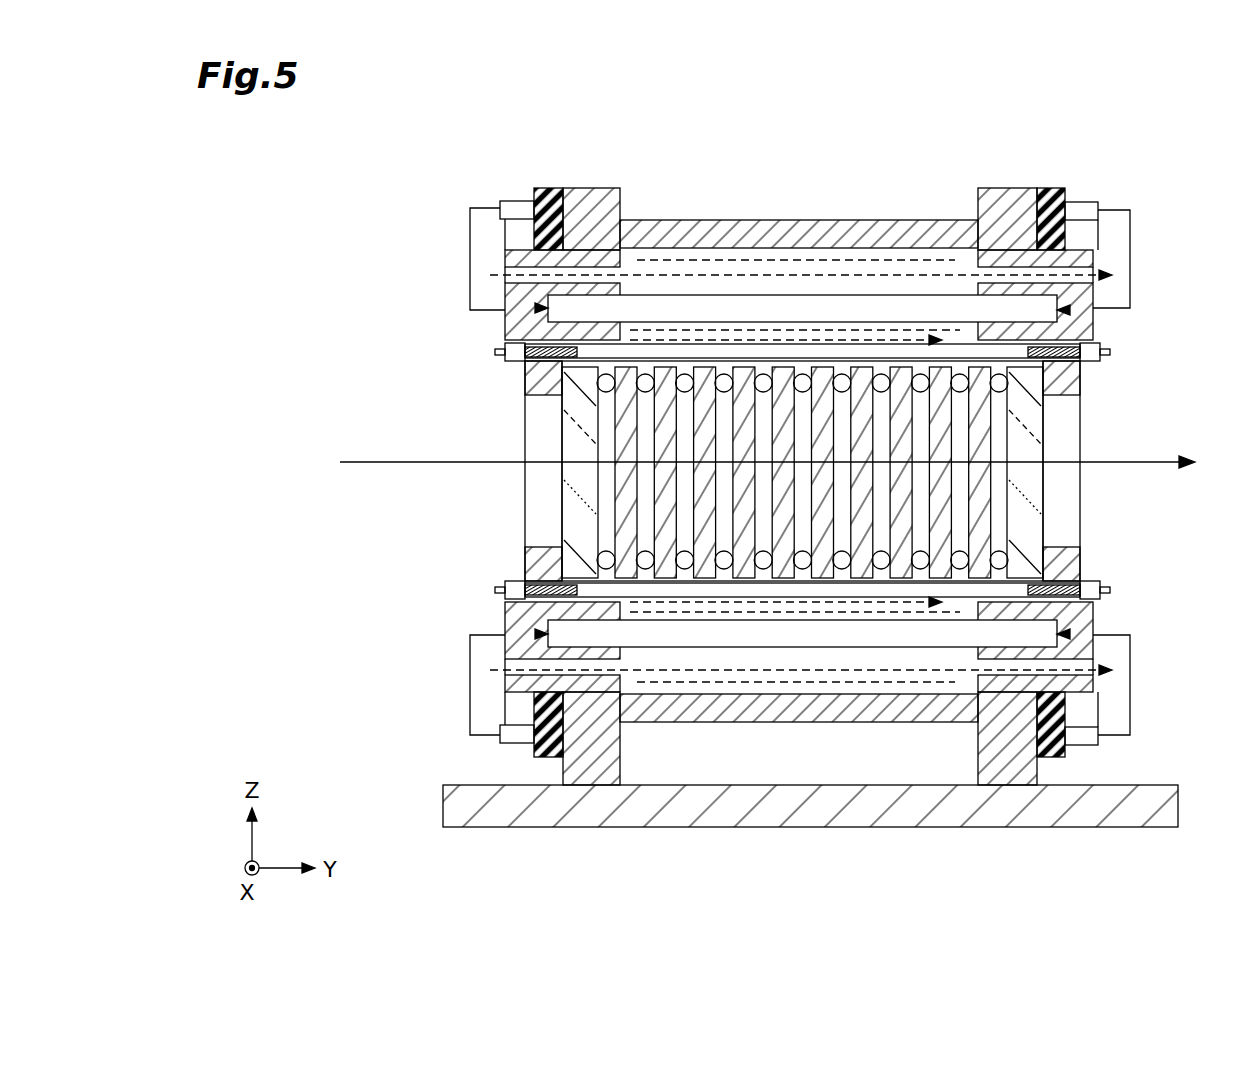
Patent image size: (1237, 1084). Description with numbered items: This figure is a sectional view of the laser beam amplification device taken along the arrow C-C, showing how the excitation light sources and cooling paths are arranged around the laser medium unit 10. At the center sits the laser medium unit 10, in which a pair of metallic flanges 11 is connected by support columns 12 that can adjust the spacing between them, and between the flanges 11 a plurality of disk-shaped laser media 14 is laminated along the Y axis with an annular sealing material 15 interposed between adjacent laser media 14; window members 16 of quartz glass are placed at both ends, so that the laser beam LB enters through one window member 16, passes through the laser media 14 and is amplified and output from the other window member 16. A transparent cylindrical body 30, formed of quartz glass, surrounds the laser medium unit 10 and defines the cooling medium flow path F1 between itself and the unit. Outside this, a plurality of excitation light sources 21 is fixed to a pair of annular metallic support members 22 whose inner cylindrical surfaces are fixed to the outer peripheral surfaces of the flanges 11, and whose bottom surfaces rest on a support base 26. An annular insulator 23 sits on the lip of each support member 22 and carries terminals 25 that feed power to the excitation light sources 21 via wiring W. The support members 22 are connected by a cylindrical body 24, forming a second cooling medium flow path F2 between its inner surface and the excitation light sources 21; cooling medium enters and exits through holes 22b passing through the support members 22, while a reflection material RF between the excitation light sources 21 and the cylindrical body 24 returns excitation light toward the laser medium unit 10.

The laser medium unit 10 is at (804, 503).
The flange 11 is at (543, 576).
The support column 12 is at (771, 365).
The laser medium 14 is at (745, 387).
The sealing material 15 is at (725, 565).
The window member 16 is at (583, 418).
The excitation light source 21 is at (922, 312).
The support member 22 is at (585, 212).
The hole 22b is at (515, 303).
The insulator 23 is at (548, 212).
The cylindrical body 24 is at (733, 243).
The terminal 25 is at (508, 205).
The support base 26 is at (1140, 808).
The transparent cylindrical body 30 is at (818, 338).
The cooling medium flow path F1 is at (710, 330).
The second cooling medium flow path F2 is at (650, 275).
The reflection material RF is at (887, 260).
The wiring W is at (470, 258).
The laser beam LB is at (701, 461).